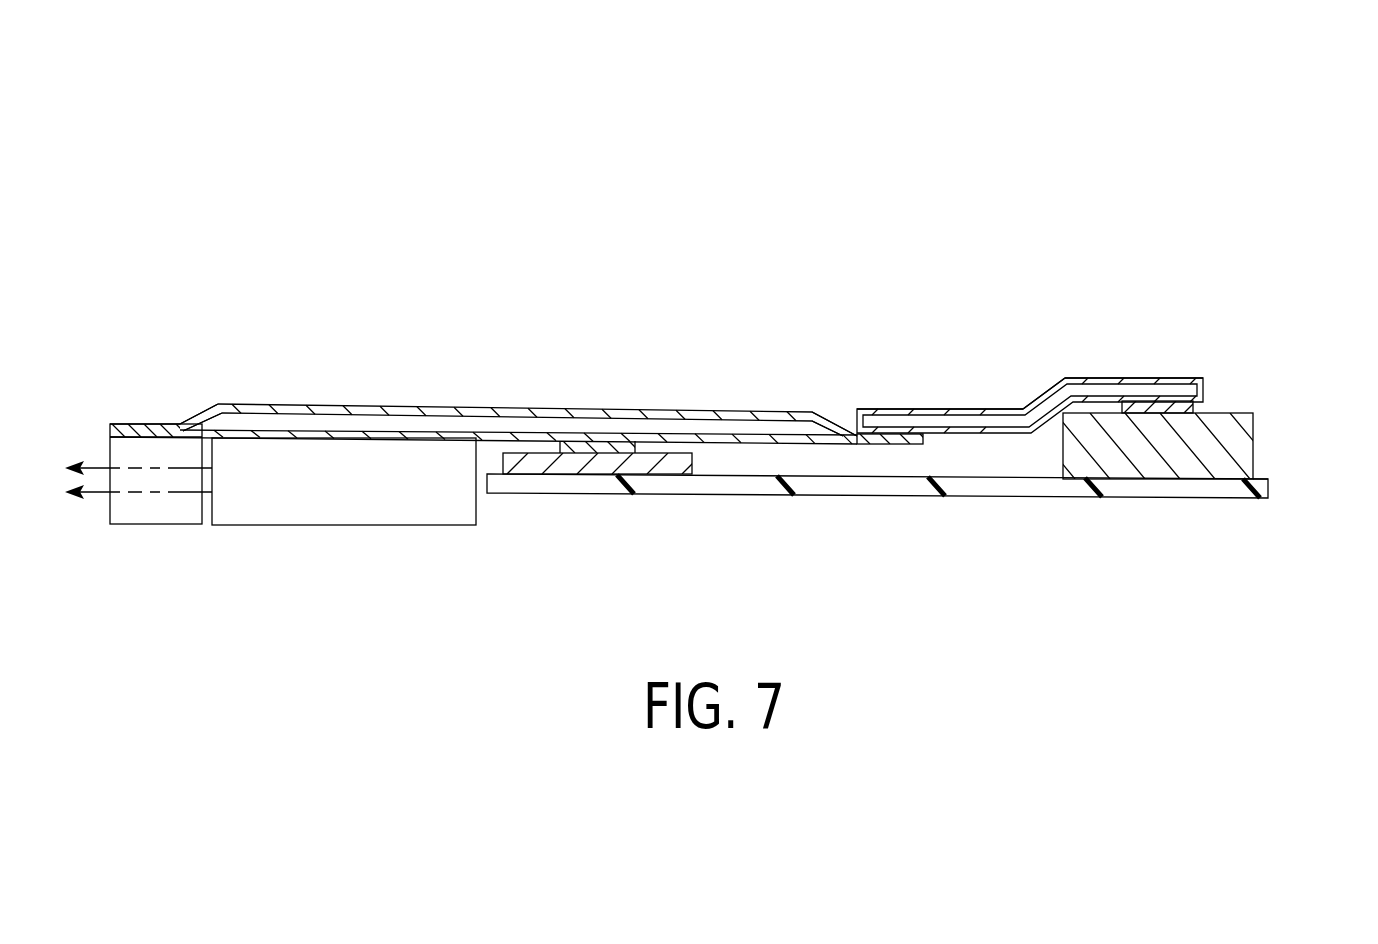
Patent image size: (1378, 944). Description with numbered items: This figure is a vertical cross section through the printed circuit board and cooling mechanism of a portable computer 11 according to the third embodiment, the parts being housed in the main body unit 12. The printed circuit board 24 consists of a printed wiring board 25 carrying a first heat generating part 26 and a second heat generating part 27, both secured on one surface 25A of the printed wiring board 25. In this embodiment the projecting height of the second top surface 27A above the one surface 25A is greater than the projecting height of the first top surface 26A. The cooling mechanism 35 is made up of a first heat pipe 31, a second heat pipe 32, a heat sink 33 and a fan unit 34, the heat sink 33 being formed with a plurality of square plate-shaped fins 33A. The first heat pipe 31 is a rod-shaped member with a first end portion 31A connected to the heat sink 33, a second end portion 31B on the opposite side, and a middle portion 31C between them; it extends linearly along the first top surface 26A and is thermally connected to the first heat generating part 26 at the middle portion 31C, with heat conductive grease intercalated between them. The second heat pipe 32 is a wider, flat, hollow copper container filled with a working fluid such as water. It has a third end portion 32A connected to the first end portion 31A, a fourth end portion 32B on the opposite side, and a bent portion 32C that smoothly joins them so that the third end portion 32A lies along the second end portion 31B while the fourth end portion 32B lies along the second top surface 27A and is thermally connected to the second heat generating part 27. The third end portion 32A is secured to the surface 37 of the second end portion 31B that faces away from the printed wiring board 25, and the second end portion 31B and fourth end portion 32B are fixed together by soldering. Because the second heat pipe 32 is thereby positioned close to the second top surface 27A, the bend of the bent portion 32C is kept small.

The portable computer 11 is at (1137, 146).
The main body unit 12 is at (960, 235).
The printed circuit board 24 is at (759, 362).
The printed wiring board 25 is at (1270, 489).
The one surface 25A is at (1260, 480).
The first heat generating part 26 is at (607, 467).
The first top surface 26A is at (568, 443).
The second heat generating part 27 is at (1130, 467).
The second top surface 27A is at (1152, 401).
The first heat pipe 31 is at (455, 406).
The first end portion 31A is at (160, 424).
The second end portion 31B is at (878, 444).
The middle portion 31C is at (643, 408).
The second heat pipe 32 is at (980, 409).
The third end portion 32A is at (907, 408).
The fourth end portion 32B is at (1192, 377).
The bent portion 32C is at (1041, 394).
The heat sink 33 is at (175, 524).
The fins 33A is at (128, 508).
The fan unit 34 is at (360, 500).
The cooling mechanism 35 is at (340, 369).
The surface 37 is at (880, 434).